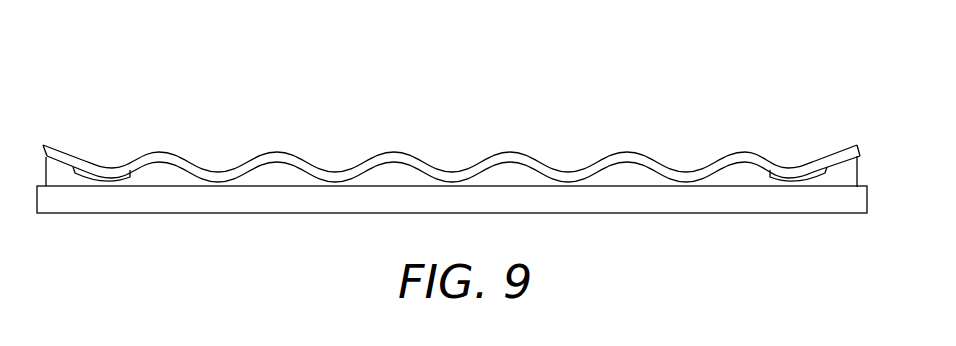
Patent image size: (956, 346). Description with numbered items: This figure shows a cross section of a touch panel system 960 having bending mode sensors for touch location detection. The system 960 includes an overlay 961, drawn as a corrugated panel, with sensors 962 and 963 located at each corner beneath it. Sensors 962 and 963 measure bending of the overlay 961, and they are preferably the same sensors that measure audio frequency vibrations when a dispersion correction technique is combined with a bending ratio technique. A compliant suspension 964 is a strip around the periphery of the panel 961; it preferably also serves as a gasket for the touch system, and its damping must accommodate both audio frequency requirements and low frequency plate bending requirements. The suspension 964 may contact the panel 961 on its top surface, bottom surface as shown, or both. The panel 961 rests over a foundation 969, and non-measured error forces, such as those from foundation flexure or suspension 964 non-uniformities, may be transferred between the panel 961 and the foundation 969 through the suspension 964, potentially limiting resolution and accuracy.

The system 960 is at (340, 51).
The overlay 961 is at (448, 172).
The sensor 962 is at (105, 177).
The sensor 963 is at (798, 179).
The compliant suspension 964 is at (272, 175).
The foundation 969 is at (323, 205).